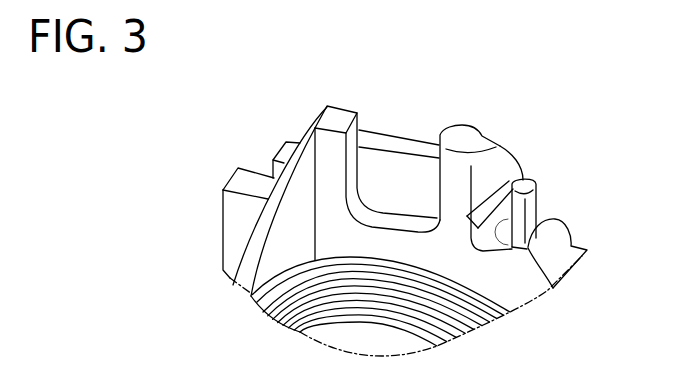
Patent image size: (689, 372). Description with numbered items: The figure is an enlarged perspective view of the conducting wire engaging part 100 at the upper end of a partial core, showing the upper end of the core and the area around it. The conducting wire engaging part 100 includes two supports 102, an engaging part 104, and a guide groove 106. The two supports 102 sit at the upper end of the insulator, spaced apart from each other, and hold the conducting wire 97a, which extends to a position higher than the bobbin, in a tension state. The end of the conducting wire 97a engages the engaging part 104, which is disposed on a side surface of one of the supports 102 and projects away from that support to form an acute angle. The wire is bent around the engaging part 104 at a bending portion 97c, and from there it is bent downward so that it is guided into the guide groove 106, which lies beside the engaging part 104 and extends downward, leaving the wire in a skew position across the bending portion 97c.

The conducting wire engaging part 100 is at (337, 82).
The support 102 is at (333, 150).
The conducting wire 97a is at (377, 138).
The bending portion 97c is at (535, 178).
The engaging part 104 is at (495, 138).
The guide groove 106 is at (528, 247).